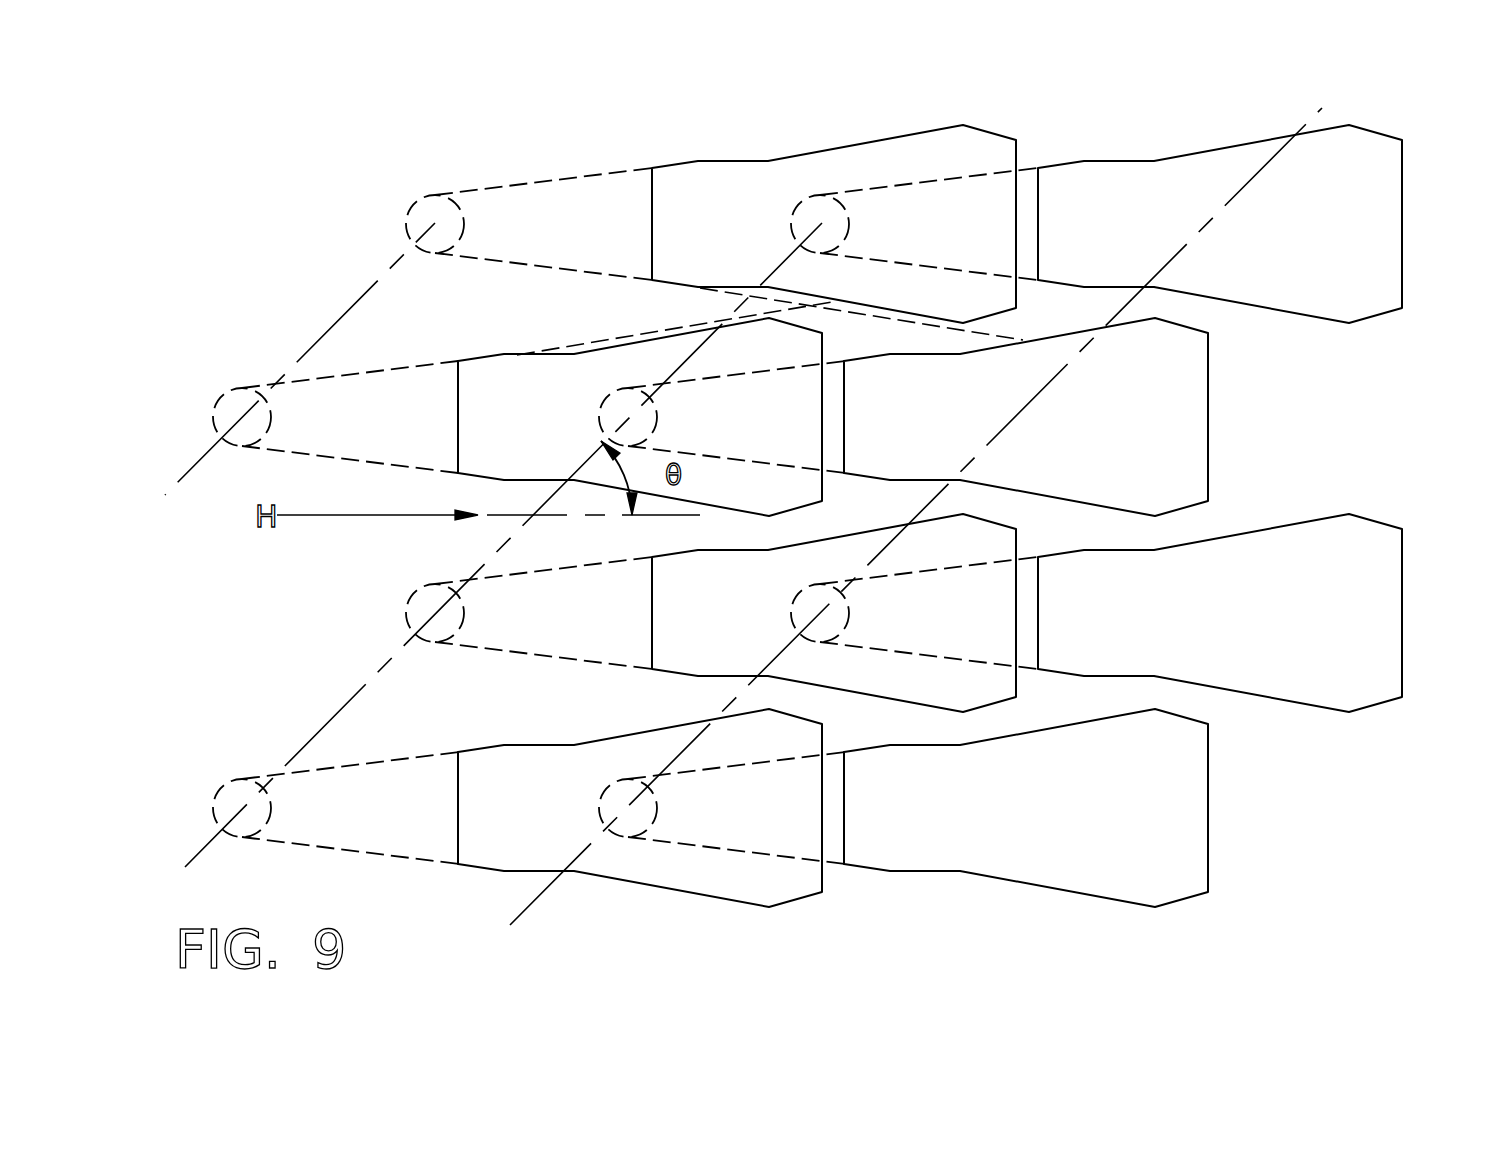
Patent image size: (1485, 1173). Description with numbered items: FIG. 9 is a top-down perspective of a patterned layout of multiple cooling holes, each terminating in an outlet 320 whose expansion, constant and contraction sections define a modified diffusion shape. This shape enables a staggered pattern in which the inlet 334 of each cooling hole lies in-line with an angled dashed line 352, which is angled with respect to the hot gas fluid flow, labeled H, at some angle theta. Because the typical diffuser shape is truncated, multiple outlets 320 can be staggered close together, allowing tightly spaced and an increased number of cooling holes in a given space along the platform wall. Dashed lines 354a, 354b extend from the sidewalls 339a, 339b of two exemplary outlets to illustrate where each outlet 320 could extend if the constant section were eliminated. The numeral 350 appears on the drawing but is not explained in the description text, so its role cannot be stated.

The staple cartridge pocket arrangement 350 is at (428, 131).
The outlet 320 is at (1247, 307).
The inlet 334 is at (812, 193).
The sidewall 339a is at (568, 266).
The sidewall 339b is at (440, 363).
The angled dashed line 352 is at (1268, 163).
The dashed line 354a is at (850, 311).
The dashed line 354b is at (612, 338).